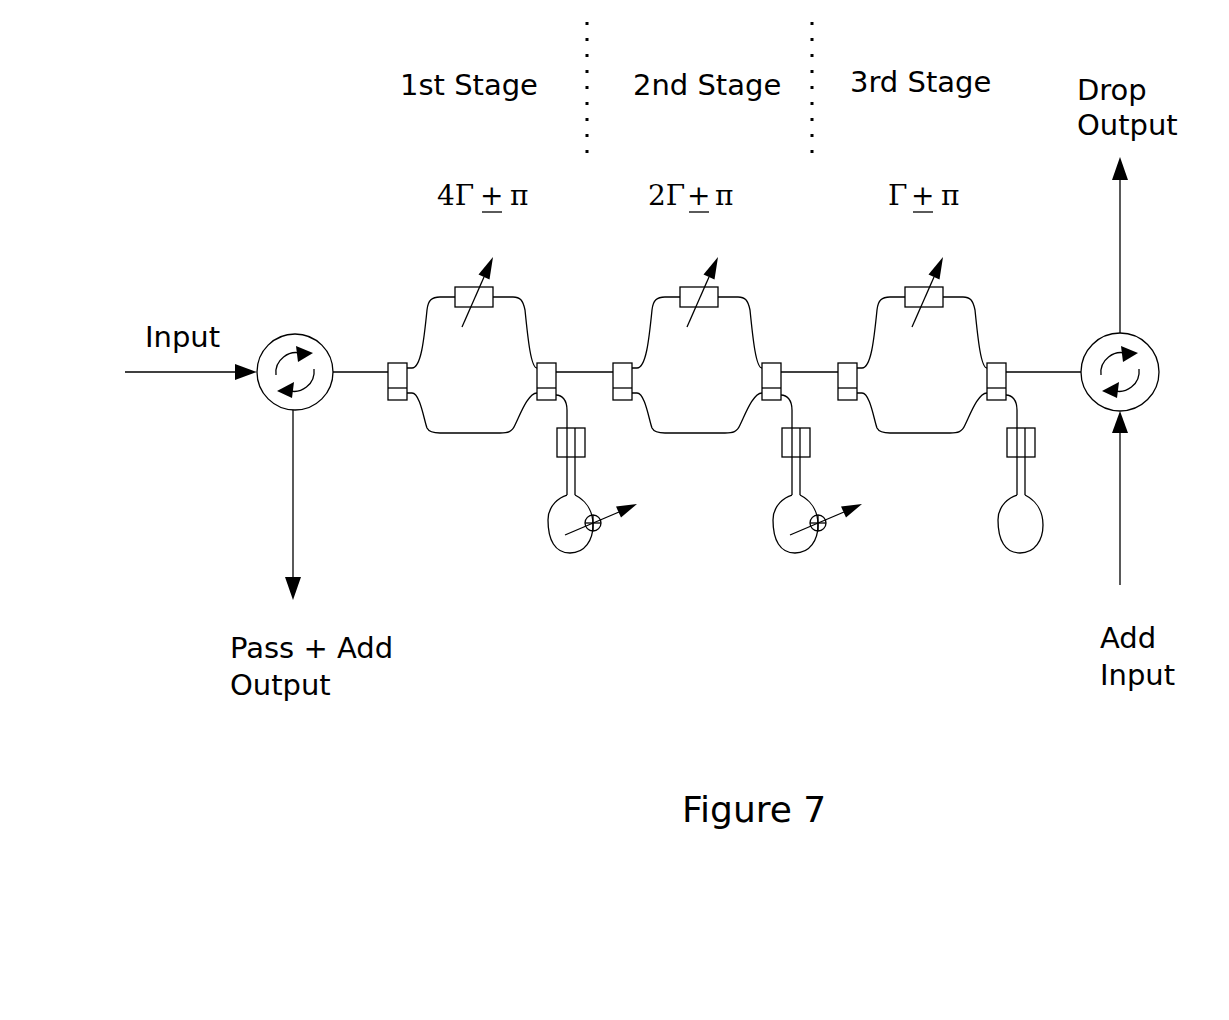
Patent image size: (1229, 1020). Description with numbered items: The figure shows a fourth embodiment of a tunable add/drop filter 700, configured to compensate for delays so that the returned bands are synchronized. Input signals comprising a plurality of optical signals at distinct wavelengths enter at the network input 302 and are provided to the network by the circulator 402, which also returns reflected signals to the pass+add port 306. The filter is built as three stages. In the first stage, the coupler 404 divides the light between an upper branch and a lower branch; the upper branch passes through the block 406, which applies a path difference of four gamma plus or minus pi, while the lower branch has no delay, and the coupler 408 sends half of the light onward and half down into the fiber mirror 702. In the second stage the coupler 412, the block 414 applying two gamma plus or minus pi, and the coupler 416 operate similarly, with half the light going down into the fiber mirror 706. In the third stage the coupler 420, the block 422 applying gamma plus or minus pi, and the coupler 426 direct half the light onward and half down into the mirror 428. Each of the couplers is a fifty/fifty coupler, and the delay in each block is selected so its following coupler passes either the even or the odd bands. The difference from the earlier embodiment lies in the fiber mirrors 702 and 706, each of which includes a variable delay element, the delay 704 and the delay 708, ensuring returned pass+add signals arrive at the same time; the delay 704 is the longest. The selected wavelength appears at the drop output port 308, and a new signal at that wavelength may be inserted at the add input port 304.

The network input 302 is at (191, 393).
The add input port 304 is at (1154, 498).
The pass+add port 306 is at (326, 505).
The drop output port 308 is at (1154, 245).
The circulator 402 is at (325, 340).
The coupler 404 is at (387, 362).
The block 406 is at (493, 290).
The coupler 408 is at (556, 362).
The coupler 412 is at (623, 339).
The block 414 is at (753, 266).
The coupler 416 is at (790, 354).
The coupler 420 is at (840, 339).
The block 422 is at (973, 262).
The coupler 426 is at (1018, 358).
The mirror 428 is at (979, 474).
The tunable add/drop filter 700 is at (766, 709).
The fiber mirror 702 is at (575, 553).
The delay 704 is at (605, 533).
The fiber mirror 706 is at (827, 513).
The delay 708 is at (845, 538).